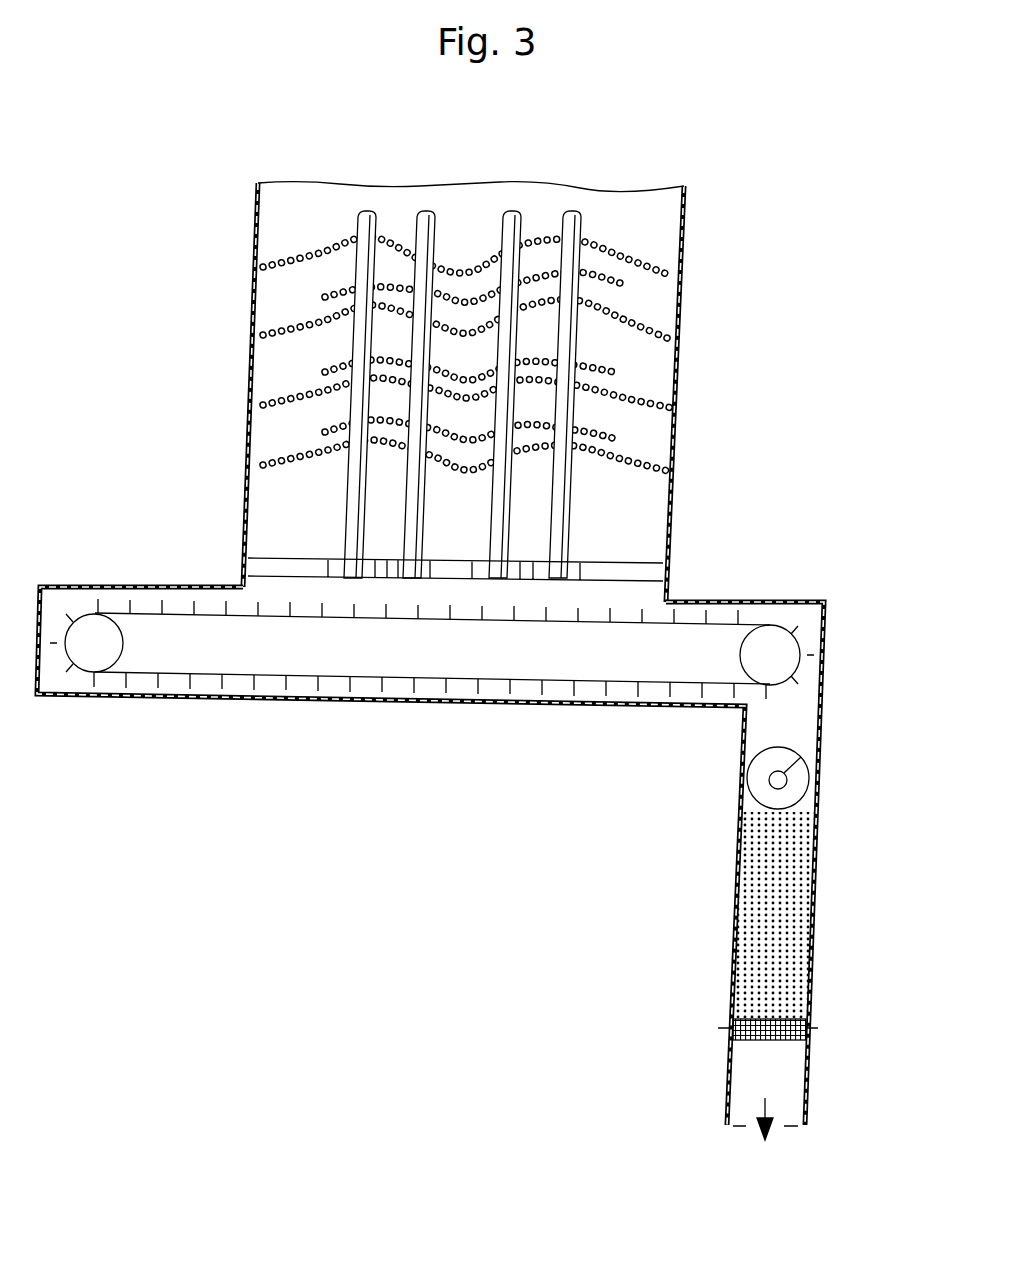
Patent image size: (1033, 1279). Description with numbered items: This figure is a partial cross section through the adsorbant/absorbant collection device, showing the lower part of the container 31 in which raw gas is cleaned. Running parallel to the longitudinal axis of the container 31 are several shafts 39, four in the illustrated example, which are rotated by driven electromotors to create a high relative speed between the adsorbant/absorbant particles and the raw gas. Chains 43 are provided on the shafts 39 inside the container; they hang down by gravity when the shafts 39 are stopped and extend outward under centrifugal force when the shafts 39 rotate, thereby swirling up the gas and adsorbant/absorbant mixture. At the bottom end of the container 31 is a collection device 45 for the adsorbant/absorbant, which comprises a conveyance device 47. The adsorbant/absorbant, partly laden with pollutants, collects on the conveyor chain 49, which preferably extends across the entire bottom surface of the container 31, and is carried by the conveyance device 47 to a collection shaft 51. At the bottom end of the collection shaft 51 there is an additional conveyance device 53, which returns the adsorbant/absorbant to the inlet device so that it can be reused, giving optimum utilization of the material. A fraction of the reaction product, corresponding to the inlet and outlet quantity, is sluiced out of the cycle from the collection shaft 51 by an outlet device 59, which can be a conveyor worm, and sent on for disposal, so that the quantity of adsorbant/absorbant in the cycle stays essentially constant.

The container 31 is at (689, 261).
The shafts 39 is at (583, 233).
The chains 43 is at (665, 388).
The collection device 45 is at (422, 856).
The conveyance device 47 is at (724, 610).
The conveyor chain 49 is at (490, 687).
The collection shaft 51 is at (814, 904).
The additional conveyance device 53 is at (815, 1043).
The outlet device 59 is at (827, 771).